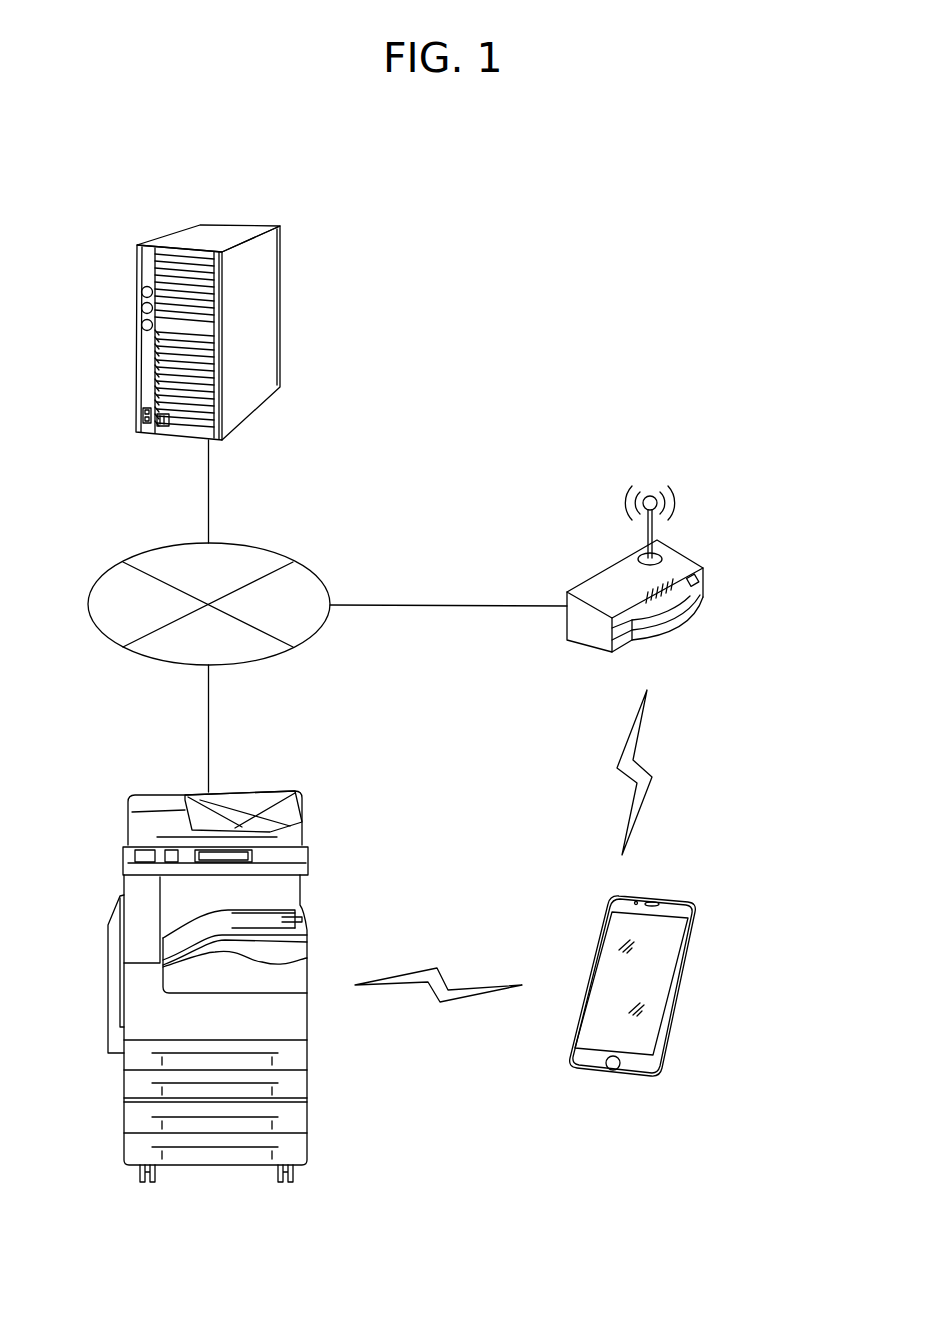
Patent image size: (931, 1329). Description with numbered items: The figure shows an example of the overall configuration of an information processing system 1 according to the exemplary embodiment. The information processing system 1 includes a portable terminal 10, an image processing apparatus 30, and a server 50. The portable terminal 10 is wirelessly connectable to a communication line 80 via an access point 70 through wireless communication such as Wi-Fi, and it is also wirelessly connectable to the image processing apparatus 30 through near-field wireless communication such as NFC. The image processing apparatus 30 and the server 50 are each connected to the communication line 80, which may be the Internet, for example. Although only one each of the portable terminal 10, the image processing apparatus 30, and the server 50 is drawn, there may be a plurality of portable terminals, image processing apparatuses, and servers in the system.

The information processing system 1 is at (718, 235).
The portable terminal 10 is at (687, 977).
The image processing apparatus 30 is at (245, 790).
The server 50 is at (282, 278).
The access point 70 is at (703, 578).
The communication line 80 is at (270, 552).